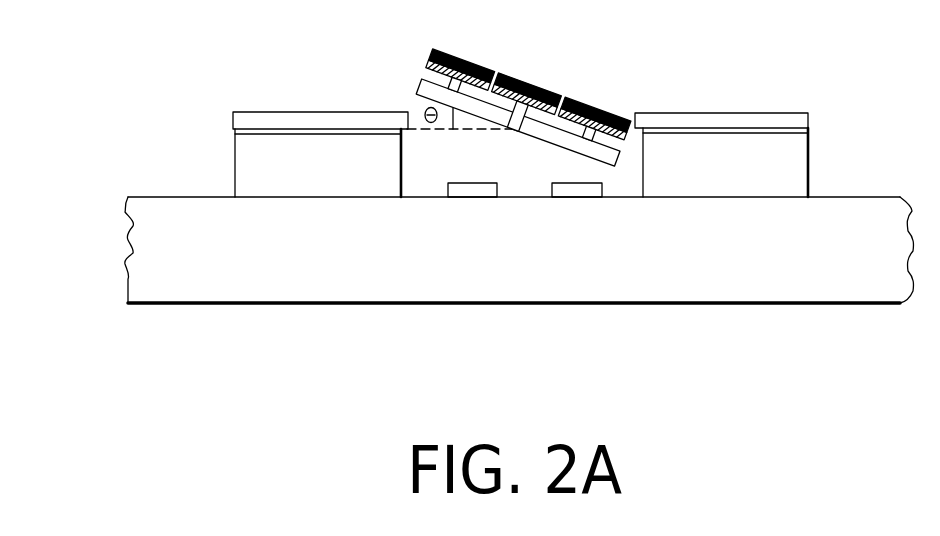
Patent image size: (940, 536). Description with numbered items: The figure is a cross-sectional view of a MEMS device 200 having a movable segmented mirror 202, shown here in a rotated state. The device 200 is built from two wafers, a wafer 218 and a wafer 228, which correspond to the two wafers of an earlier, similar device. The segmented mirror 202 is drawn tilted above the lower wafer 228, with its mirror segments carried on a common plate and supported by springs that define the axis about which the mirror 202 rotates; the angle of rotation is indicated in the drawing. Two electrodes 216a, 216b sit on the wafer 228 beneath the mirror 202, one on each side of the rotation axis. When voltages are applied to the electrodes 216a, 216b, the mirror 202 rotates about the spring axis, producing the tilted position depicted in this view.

The MEMS device 200 is at (478, 191).
The movable segmented mirror 202 is at (467, 89).
The electrode 216a is at (470, 190).
The electrode 216b is at (575, 190).
The wafer 218 is at (130, 101).
The wafer 228 is at (675, 285).